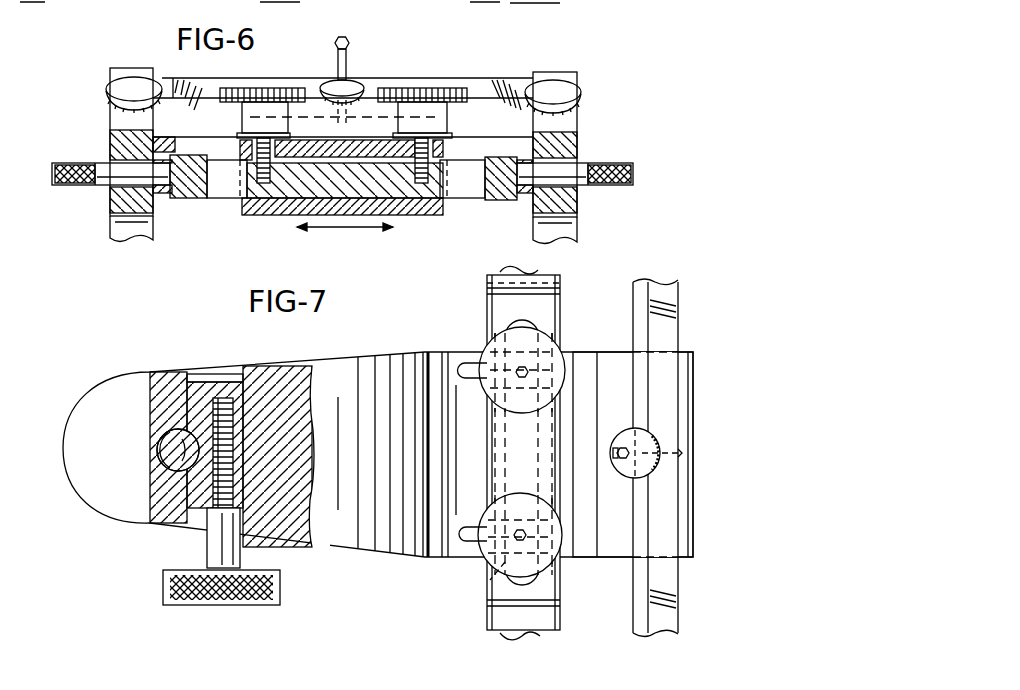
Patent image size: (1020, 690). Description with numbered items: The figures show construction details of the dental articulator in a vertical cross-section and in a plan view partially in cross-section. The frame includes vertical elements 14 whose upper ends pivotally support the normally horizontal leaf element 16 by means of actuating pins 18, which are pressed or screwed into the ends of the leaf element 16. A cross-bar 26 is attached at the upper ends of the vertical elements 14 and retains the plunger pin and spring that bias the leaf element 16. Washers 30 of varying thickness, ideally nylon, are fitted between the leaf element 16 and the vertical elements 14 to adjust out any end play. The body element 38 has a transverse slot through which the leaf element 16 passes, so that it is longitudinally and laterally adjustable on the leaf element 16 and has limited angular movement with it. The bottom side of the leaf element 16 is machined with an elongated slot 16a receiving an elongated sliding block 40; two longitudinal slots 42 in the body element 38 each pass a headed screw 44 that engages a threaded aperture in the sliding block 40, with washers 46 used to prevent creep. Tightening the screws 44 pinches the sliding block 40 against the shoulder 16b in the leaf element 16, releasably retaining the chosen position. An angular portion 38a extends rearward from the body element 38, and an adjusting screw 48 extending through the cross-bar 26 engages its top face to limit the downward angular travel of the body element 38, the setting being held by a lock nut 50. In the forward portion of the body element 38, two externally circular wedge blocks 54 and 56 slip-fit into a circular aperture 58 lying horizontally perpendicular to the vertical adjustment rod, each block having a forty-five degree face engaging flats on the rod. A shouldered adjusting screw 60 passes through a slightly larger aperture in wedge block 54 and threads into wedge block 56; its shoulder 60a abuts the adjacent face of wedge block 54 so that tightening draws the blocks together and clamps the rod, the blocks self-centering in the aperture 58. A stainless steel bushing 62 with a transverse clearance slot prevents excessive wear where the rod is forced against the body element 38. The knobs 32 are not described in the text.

In FIG. 6, the vertical element 14 is at (110, 228).
In FIG. 6, the leaf element 16 is at (190, 202).
In FIG. 7, the leaf element 16 is at (487, 312).
In FIG. 6, the elongated slot 16a is at (222, 192).
In FIG. 7, the elongated slot 16a is at (535, 322).
In FIG. 6, the shoulder 16b is at (565, 136).
In FIG. 7, the shoulder 16b is at (487, 283).
In FIG. 6, the actuating pin 18 is at (76, 162).
In FIG. 7, the actuating pin 18 is at (505, 270).
In FIG. 6, the cross-bar 26 is at (478, 78).
In FIG. 7, the cross-bar 26 is at (680, 308).
In FIG. 6, the washer 30 is at (165, 194).
In FIG. 6, the adjusting knob 32 is at (120, 92).
In FIG. 6, the body element 38 is at (270, 215).
In FIG. 7, the body element 38 is at (352, 550).
In FIG. 7, the angular portion 38a is at (693, 428).
In FIG. 6, the sliding block 40 is at (410, 195).
In FIG. 7, the sliding block 40 is at (490, 580).
In FIG. 6, the longitudinal slot 42 is at (240, 138).
In FIG. 7, the longitudinal slot 42 is at (472, 362).
In FIG. 6, the headed screw 44 is at (265, 88).
In FIG. 7, the headed screw 44 is at (565, 355).
In FIG. 6, the washer 46 is at (295, 148).
In FIG. 6, the adjusting screw 48 is at (348, 42).
In FIG. 7, the adjusting screw 48 is at (630, 450).
In FIG. 6, the lock nut 50 is at (358, 84).
In FIG. 7, the lock nut 50 is at (660, 448).
In FIG. 7, the wedge block 54 is at (192, 493).
In FIG. 7, the wedge block 56 is at (198, 395).
In FIG. 7, the circular aperture 58 is at (205, 520).
In FIG. 7, the adjusting screw 60 is at (280, 588).
In FIG. 7, the shoulder 60a is at (242, 545).
In FIG. 7, the bushing 62 is at (158, 445).